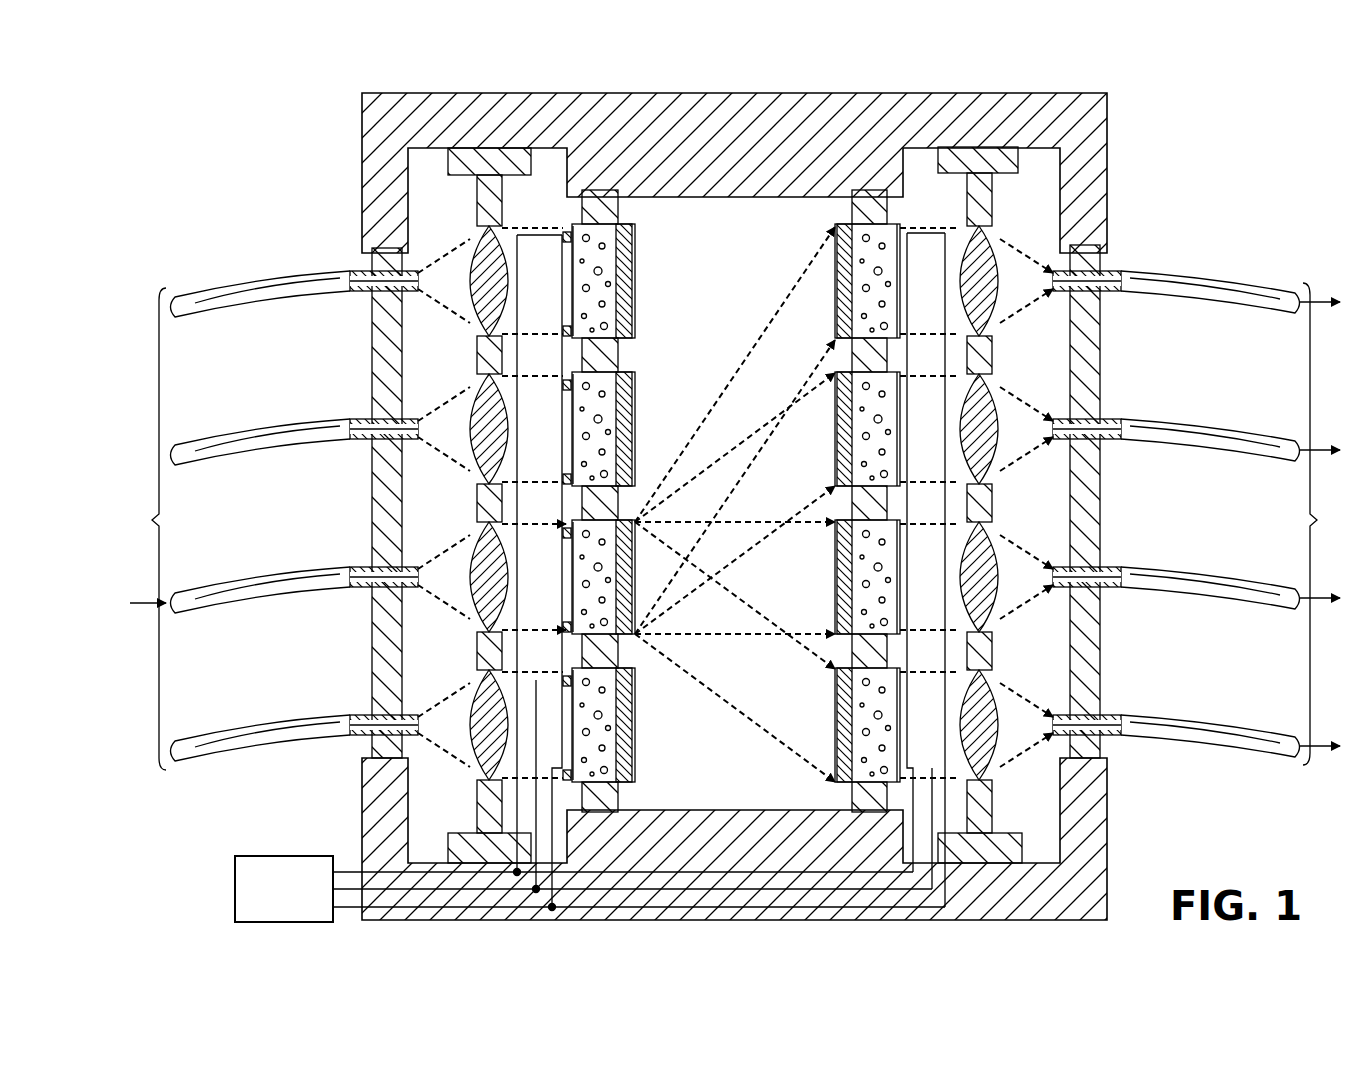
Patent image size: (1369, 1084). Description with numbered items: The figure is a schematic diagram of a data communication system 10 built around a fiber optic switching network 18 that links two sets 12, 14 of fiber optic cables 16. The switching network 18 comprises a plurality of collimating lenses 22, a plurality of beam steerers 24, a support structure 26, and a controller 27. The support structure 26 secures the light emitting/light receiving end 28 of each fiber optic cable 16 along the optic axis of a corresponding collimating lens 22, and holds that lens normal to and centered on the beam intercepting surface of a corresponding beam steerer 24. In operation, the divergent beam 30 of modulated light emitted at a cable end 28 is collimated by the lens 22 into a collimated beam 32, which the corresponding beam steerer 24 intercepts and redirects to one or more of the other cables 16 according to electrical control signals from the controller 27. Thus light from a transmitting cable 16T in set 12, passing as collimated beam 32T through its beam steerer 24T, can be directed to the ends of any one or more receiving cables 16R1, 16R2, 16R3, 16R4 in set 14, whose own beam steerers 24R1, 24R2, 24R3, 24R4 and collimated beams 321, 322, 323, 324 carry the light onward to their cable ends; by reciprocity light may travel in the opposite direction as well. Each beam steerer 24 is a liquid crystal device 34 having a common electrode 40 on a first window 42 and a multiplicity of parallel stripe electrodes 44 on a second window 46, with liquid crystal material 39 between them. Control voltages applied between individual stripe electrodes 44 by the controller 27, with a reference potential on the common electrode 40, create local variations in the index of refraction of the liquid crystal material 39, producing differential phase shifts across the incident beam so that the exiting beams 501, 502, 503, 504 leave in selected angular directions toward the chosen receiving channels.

The data communication system 10 is at (1162, 167).
The set of fiber optic cables 12 is at (144, 529).
The set of fiber optic cables 14 is at (1324, 524).
The fiber optic cable 16 is at (261, 573).
The fiber optic cable 16T is at (261, 430).
The fiber optic cable 16R1 is at (1217, 727).
The fiber optic cable 16R2 is at (1217, 580).
The fiber optic cable 16R3 is at (1217, 432).
The fiber optic cable 16R4 is at (1217, 284).
The fiber optic switching network 18 is at (420, 200).
The collimating lens 22 is at (734, 493).
The beam steerer 24 is at (650, 500).
The beam steerer 24T is at (636, 516).
The beam steerer 24R1 is at (828, 702).
The beam steerer 24R2 is at (828, 554).
The beam steerer 24R3 is at (813, 410).
The beam steerer 24R4 is at (800, 274).
The support structure 26 is at (364, 150).
The controller 27 is at (235, 884).
The light emitting/light receiving end 28 is at (738, 499).
The divergent beam 30 is at (1034, 741).
The collimated beam 32 is at (548, 442).
The collimated beam 32T is at (546, 590).
The collimated beam 321 is at (943, 741).
The collimated beam 322 is at (943, 590).
The collimated beam 323 is at (943, 442).
The collimated beam 324 is at (943, 294).
The liquid crystal device 34 is at (734, 503).
The liquid crystal material 39 is at (630, 262).
The common electrode 40 is at (736, 502).
The first window 42 is at (640, 305).
The stripe electrodes 44 is at (550, 487).
The second window 46 is at (734, 501).
The exiting collimated beam 501 is at (803, 721).
The exiting collimated beam 502 is at (786, 597).
The exiting collimated beam 503 is at (803, 462).
The exiting collimated beam 504 is at (803, 347).